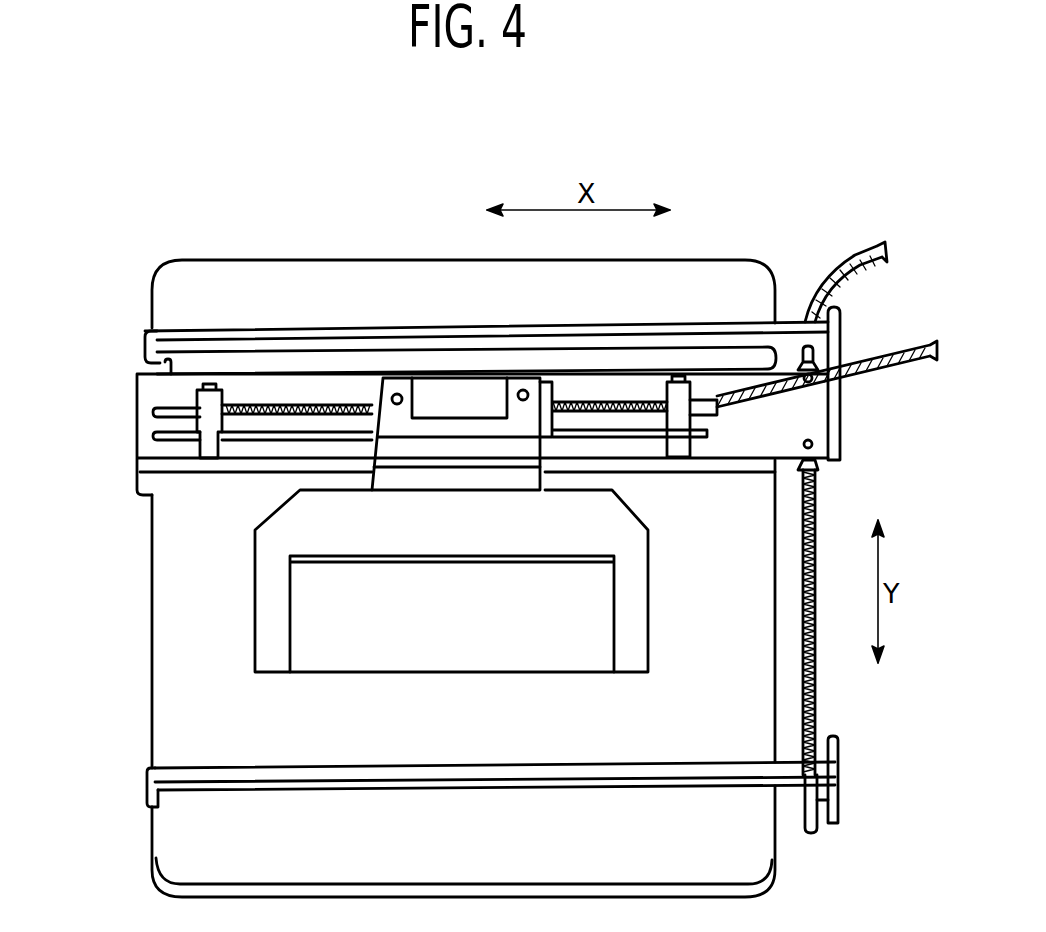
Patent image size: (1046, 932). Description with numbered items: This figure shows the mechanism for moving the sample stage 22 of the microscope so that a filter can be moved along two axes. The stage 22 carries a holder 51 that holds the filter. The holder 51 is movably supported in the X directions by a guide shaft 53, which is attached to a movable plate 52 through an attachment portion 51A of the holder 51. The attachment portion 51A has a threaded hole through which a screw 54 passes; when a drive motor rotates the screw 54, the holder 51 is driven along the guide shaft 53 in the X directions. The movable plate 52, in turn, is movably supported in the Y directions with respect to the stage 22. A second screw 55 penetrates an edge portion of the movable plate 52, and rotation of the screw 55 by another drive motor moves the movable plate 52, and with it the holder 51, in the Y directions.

The stage 22 is at (148, 772).
The holder 51 is at (282, 541).
The attachment portion 51A is at (523, 383).
The movable plate 52 is at (277, 383).
The guide shaft 53 is at (153, 440).
The screw 54 is at (330, 403).
The screw 55 is at (818, 705).